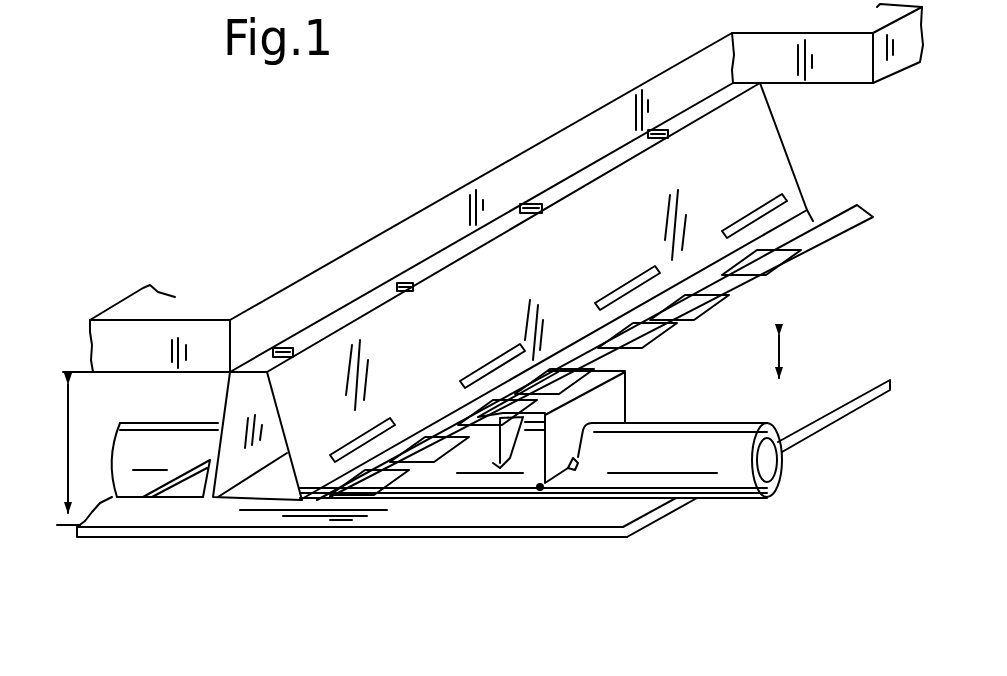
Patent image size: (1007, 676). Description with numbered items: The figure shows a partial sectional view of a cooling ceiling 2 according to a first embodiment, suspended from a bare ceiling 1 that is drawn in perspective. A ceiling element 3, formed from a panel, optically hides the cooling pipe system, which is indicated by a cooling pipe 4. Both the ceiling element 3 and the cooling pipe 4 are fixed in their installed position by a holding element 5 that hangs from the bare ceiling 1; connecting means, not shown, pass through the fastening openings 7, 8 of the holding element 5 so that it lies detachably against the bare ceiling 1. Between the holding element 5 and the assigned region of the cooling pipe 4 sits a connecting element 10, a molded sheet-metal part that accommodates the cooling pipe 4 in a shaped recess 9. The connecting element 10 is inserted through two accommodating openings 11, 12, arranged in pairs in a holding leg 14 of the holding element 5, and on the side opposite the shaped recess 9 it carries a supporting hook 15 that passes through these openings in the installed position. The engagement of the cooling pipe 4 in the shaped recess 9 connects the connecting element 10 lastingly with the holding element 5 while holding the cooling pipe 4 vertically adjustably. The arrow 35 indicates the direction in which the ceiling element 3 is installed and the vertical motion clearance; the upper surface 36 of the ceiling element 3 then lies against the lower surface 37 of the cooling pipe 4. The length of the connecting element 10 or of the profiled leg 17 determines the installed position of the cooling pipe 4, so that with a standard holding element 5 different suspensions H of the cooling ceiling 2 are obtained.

The bare ceiling 1 is at (186, 338).
The cooling ceiling 2 is at (205, 578).
The ceiling element 3 is at (320, 538).
The cooling pipe 4 is at (752, 502).
The holding element 5 is at (352, 310).
The fastening opening 7 is at (542, 213).
The fastening opening 8 is at (668, 137).
The shaped recess 9 is at (573, 465).
The connecting element 10 is at (540, 487).
The accommodating opening 11 is at (482, 417).
The accommodating opening 12 is at (625, 371).
The holding leg 14 is at (747, 282).
The supporting hook 15 is at (500, 447).
The profiled leg 17 is at (610, 408).
The arrow 35 is at (783, 353).
The upper surface 36 is at (615, 510).
The lower surface 37 is at (655, 498).
The suspension H is at (68, 462).